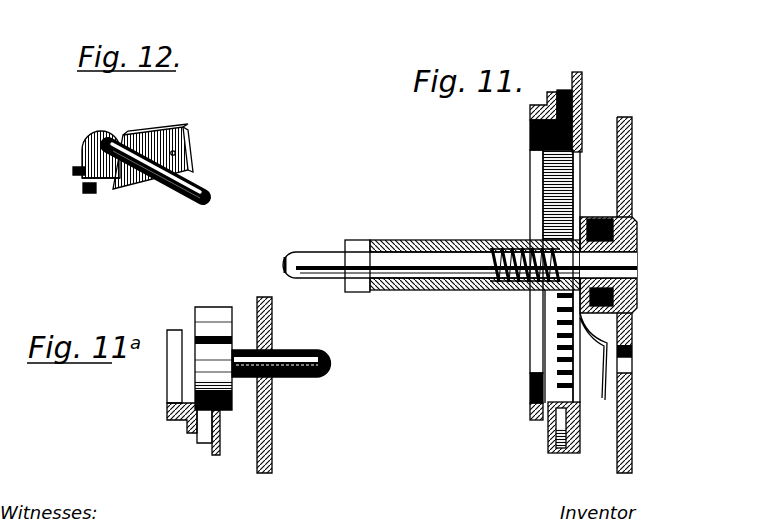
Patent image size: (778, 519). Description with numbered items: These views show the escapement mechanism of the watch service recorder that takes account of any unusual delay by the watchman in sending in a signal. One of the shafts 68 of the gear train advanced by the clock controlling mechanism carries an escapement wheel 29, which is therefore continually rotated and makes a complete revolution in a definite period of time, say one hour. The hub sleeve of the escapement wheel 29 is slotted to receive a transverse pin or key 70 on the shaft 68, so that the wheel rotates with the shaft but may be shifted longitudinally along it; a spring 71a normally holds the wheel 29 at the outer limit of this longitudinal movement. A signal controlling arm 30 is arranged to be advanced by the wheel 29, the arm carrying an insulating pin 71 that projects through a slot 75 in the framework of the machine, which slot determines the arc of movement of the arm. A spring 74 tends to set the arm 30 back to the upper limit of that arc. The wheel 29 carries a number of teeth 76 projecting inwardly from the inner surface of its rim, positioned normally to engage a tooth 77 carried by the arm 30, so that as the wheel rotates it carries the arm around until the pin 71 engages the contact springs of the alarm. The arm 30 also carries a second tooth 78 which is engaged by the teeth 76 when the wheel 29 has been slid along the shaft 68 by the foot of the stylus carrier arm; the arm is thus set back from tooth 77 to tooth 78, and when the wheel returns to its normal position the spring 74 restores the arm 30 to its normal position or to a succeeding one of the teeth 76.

In FIG. 11A, the escapement wheel 29 is at (171, 421).
In FIG. 11, the escapement wheel 29 is at (538, 106).
In FIG. 12, the signal controlling arm 30 is at (188, 133).
In FIG. 11A, the signal controlling arm 30 is at (205, 311).
In FIG. 11, the signal controlling arm 30 is at (605, 392).
In FIG. 11, the shaft 68 is at (303, 280).
In FIG. 11, the transverse pin or key 70 is at (363, 240).
In FIG. 12, the insulating pin 71 is at (168, 193).
In FIG. 11A, the insulating pin 71 is at (300, 375).
In FIG. 11, the spring 71a is at (510, 238).
In FIG. 11, the spring 74 is at (623, 298).
In FIG. 11A, the slot 75 is at (275, 387).
In FIG. 11, the slot 75 is at (633, 373).
In FIG. 11A, the teeth 76 is at (218, 431).
In FIG. 11, the teeth 76 is at (577, 167).
In FIG. 12, the tooth 77 is at (77, 168).
In FIG. 11A, the tooth 77 is at (200, 400).
In FIG. 12, the tooth 78 is at (88, 192).
In FIG. 11A, the tooth 78 is at (224, 407).